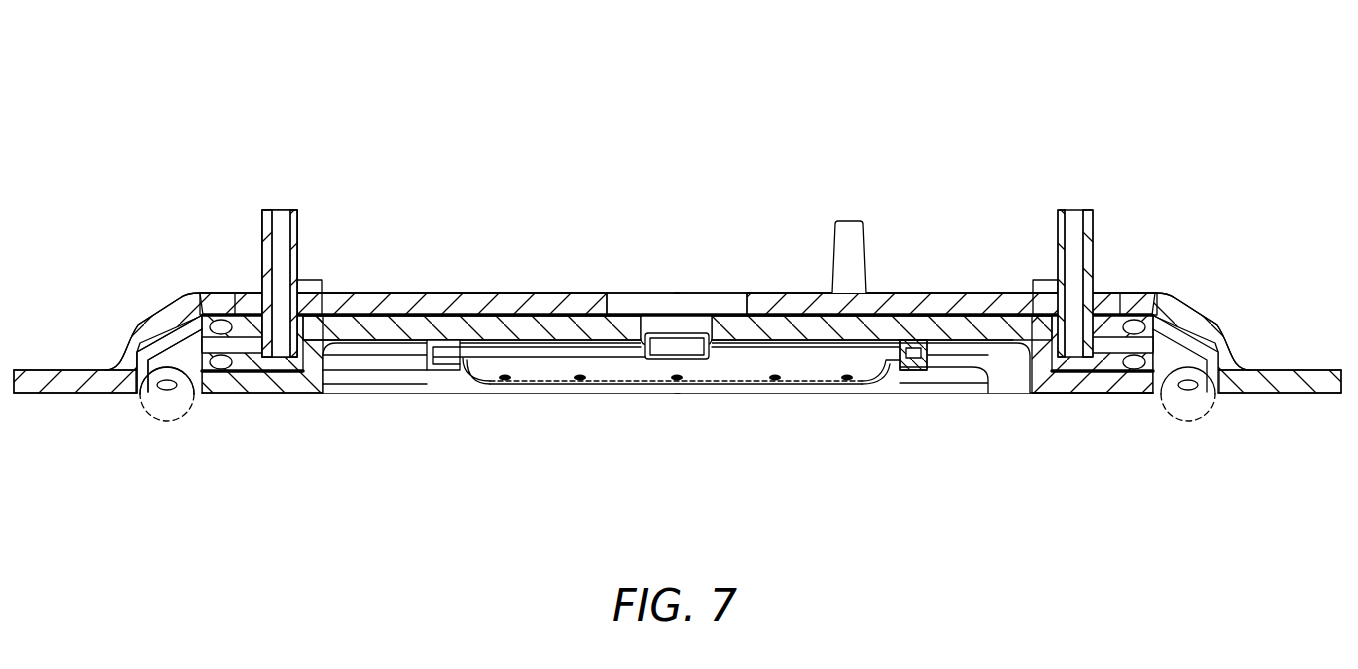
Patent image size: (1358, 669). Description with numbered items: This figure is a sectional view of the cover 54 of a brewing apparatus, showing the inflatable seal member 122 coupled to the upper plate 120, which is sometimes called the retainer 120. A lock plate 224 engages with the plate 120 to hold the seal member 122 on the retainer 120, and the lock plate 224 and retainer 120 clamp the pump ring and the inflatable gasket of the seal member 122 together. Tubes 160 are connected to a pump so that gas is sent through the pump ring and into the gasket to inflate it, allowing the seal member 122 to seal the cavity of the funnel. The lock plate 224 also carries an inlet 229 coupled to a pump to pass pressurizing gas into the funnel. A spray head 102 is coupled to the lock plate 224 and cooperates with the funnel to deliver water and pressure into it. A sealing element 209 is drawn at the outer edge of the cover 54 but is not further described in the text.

The cover 54 is at (502, 126).
The tubes 160 is at (262, 237).
The inflatable seal member 122 is at (158, 328).
The upper plate 120 is at (455, 295).
The inlet 229 is at (867, 243).
The seal 209 is at (180, 395).
The spray head 102 is at (677, 378).
The lock plate 224 is at (1047, 388).